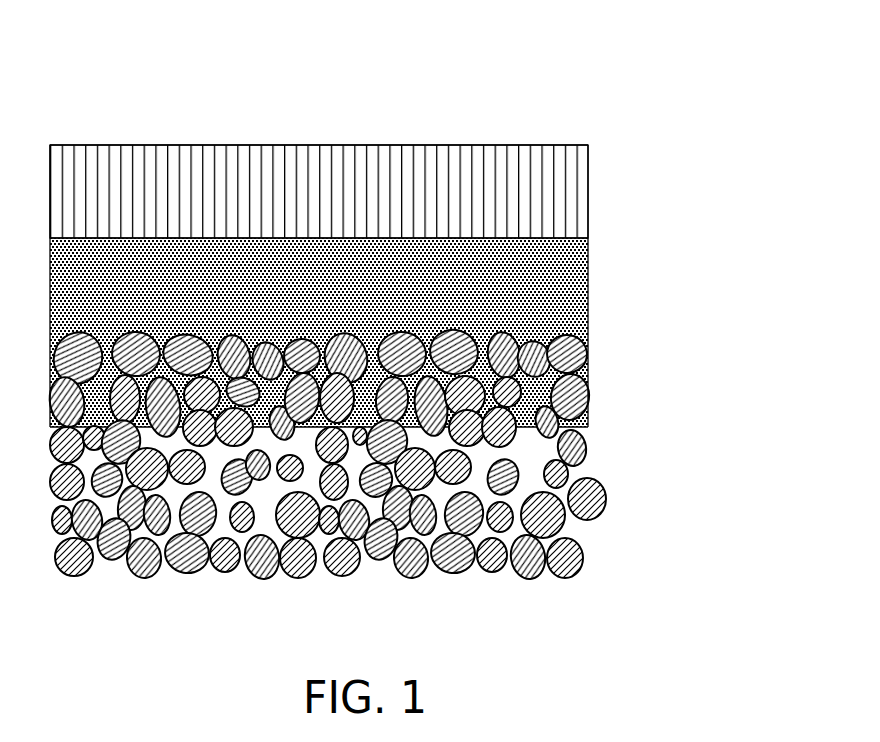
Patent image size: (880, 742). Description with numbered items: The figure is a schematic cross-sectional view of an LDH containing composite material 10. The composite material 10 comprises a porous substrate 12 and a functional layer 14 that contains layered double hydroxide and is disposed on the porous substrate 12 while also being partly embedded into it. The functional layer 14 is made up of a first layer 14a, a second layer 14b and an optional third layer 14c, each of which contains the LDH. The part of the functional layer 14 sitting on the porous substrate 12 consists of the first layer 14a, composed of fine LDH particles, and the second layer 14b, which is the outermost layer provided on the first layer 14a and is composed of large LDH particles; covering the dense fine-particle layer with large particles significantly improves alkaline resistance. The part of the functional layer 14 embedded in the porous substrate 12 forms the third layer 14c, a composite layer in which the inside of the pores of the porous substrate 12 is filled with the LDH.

The composite material 10 is at (638, 92).
The porous substrate 12 is at (585, 447).
The functional layer 14 is at (391, 293).
The first layer 14a is at (597, 242).
The second layer 14b is at (597, 145).
The third layer 14c is at (350, 386).